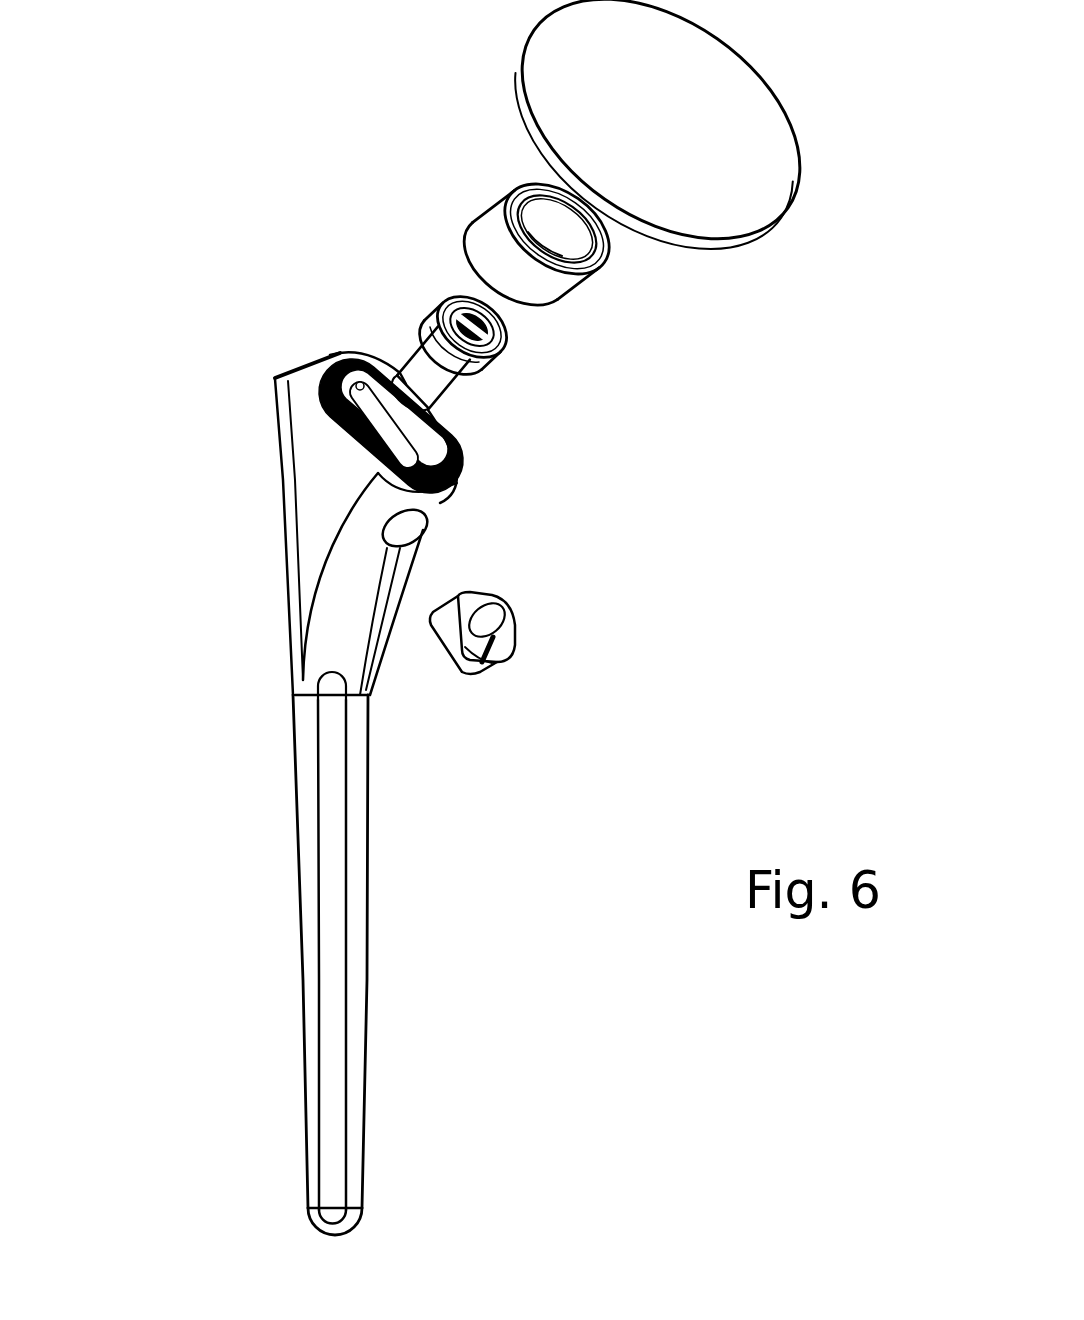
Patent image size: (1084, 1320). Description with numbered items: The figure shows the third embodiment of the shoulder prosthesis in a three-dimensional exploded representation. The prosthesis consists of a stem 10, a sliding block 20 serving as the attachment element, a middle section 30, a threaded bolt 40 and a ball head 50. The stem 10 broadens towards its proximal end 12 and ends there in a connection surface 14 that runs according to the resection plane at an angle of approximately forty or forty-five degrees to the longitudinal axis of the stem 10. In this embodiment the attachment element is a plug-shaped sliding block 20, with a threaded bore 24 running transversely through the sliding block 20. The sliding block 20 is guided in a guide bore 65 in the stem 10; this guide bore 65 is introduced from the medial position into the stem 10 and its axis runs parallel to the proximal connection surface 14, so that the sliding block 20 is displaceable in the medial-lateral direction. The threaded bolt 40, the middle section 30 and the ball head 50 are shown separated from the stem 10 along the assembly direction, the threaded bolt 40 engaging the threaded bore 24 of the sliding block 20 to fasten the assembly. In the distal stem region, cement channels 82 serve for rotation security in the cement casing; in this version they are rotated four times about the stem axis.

The stem 10 is at (347, 945).
The proximal end 12 is at (313, 437).
The connection surface 14 is at (337, 350).
The sliding block 20 is at (503, 637).
The threaded bore 24 is at (483, 617).
The middle section 30 is at (583, 293).
The threaded bolt 40 is at (467, 365).
The ball head 50 is at (762, 122).
The guide bore 65 is at (413, 521).
The cement channels 82 is at (333, 1064).